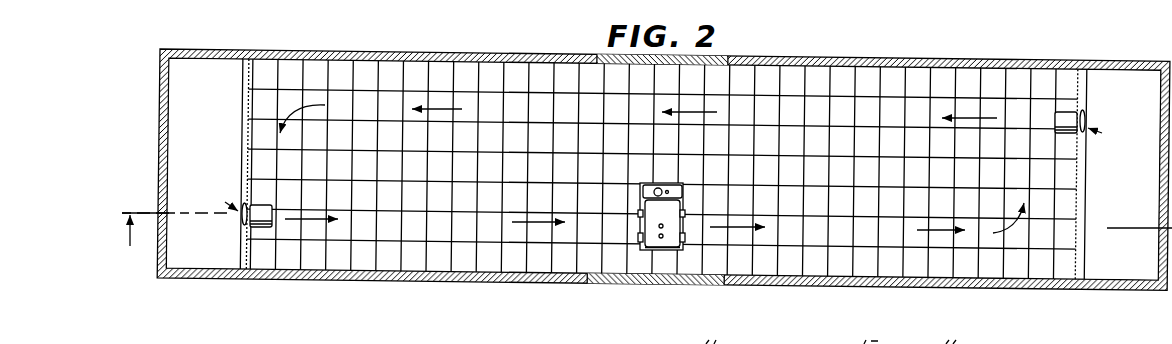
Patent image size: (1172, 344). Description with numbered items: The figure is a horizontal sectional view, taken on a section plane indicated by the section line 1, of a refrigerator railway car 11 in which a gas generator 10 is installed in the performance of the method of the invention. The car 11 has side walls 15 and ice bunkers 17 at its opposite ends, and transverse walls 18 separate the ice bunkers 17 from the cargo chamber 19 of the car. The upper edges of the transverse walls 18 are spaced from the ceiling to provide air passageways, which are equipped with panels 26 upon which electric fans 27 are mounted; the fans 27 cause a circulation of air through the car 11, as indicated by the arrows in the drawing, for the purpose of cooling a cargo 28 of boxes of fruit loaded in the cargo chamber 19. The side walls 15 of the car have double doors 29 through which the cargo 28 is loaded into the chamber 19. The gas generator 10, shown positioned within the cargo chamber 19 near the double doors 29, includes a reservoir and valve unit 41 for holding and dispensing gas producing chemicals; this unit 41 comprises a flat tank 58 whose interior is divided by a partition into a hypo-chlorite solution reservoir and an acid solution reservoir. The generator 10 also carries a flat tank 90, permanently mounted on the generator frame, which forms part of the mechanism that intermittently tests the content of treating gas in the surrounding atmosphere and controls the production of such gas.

The section line 1 is at (176, 240).
The gas generator 10 is at (660, 237).
The refrigerator railway car 11 is at (778, 286).
The side walls 15 is at (880, 58).
The ice bunkers 17 is at (1171, 146).
The transverse walls 18 is at (243, 163).
The cargo chamber 19 is at (463, 266).
The panels 26 is at (250, 135).
The electric fan 27 is at (262, 213).
The cargo 28 is at (388, 256).
The double doors 29 is at (670, 283).
The reservoir and valve unit 41 is at (687, 220).
The flat tank 58 is at (650, 210).
The flat tank 90 is at (675, 187).